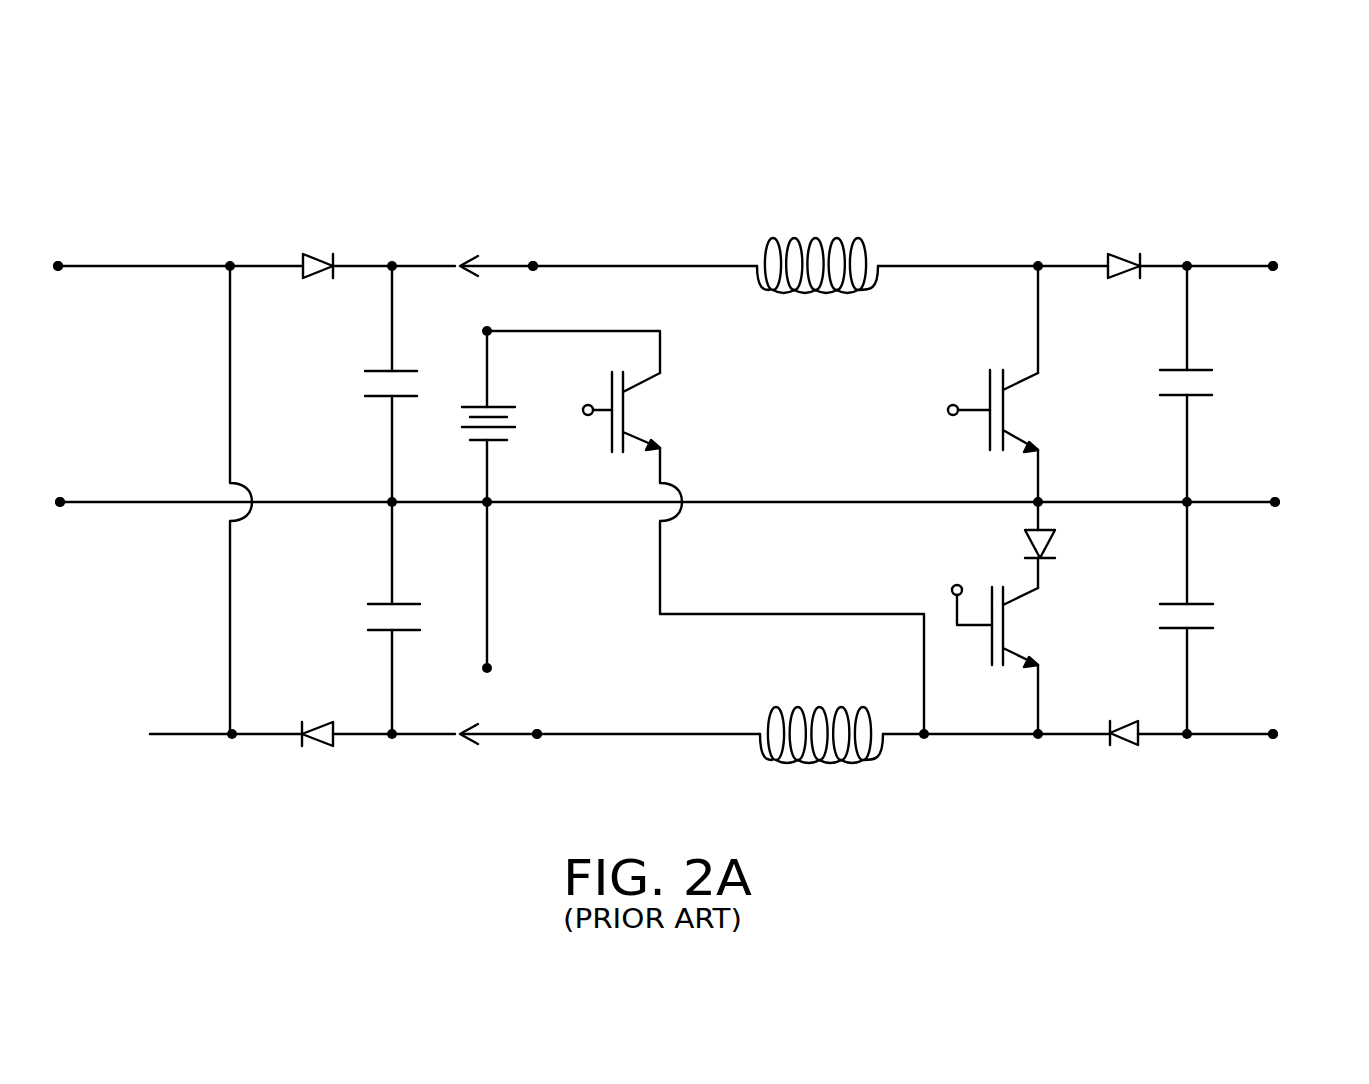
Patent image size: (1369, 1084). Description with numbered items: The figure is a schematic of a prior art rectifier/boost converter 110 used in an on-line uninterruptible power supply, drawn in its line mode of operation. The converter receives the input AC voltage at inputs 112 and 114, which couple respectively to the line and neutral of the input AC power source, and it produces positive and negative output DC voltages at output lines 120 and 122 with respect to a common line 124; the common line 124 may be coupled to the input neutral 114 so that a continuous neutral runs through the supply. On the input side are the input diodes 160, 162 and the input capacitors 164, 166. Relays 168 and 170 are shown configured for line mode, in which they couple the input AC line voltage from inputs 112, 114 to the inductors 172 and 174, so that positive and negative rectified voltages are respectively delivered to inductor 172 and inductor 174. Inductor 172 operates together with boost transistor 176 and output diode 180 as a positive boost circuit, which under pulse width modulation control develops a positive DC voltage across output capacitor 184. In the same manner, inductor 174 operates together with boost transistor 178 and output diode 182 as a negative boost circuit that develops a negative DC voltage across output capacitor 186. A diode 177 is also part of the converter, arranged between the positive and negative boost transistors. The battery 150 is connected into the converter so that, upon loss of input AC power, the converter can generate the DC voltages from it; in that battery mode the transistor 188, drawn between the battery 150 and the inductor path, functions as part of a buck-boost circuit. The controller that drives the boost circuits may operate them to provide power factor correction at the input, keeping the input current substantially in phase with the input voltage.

The rectifier/boost converter 110 is at (713, 172).
The input 112 is at (60, 258).
The input 114 is at (62, 494).
The output line 120 is at (1276, 268).
The output line 122 is at (1276, 736).
The common line 124 is at (1278, 504).
The battery 150 is at (515, 425).
The input diode 160 is at (312, 253).
The input diode 162 is at (318, 748).
The input capacitor 164 is at (365, 380).
The input capacitor 166 is at (368, 617).
The relay 168 is at (498, 263).
The relay 170 is at (498, 743).
The inductor 172 is at (818, 240).
The inductor 174 is at (830, 762).
The boost transistor 176 is at (1032, 410).
The diode 177 is at (1050, 537).
The boost transistor 178 is at (1045, 622).
The output diode 180 is at (1122, 250).
The output diode 182 is at (1122, 747).
The output capacitor 184 is at (1212, 380).
The output capacitor 186 is at (1213, 616).
The transistor 188 is at (643, 407).